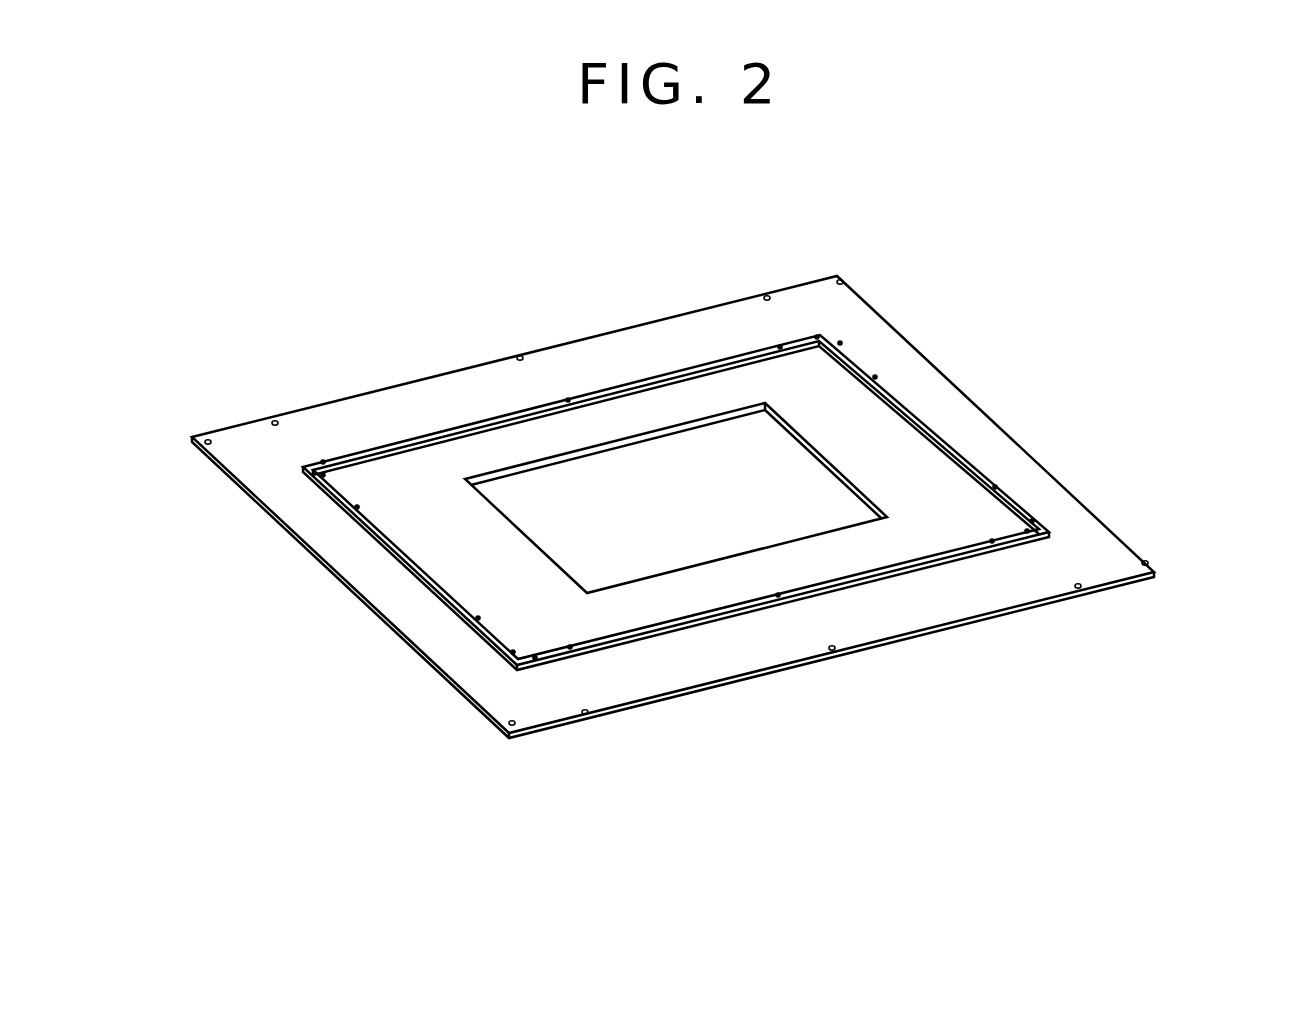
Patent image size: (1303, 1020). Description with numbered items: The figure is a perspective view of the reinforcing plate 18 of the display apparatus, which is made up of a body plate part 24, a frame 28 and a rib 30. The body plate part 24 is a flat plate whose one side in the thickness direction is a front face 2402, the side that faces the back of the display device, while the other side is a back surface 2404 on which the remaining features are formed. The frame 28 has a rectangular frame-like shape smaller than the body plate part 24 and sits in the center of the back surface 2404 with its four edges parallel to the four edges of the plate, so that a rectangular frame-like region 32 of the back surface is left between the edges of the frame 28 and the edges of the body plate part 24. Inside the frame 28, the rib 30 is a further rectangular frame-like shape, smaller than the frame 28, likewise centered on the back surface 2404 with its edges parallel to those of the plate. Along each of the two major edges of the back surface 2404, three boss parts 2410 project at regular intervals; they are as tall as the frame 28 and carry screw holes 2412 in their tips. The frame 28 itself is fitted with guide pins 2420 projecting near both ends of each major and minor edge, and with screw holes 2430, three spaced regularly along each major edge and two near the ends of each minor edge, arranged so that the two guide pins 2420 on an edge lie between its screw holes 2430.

The reinforcing plate 18 is at (420, 230).
The body plate part 24 is at (455, 393).
The front face 2402 is at (722, 688).
The back surface 2404 is at (415, 405).
The frame 28 is at (682, 367).
The rib 30 is at (817, 448).
The rectangular frame-like region 32 is at (990, 433).
The boss parts 2410 is at (832, 648).
The screw holes 2412 is at (1117, 632).
The guide pins 2420 is at (323, 462).
The screw holes 2430 is at (323, 475).